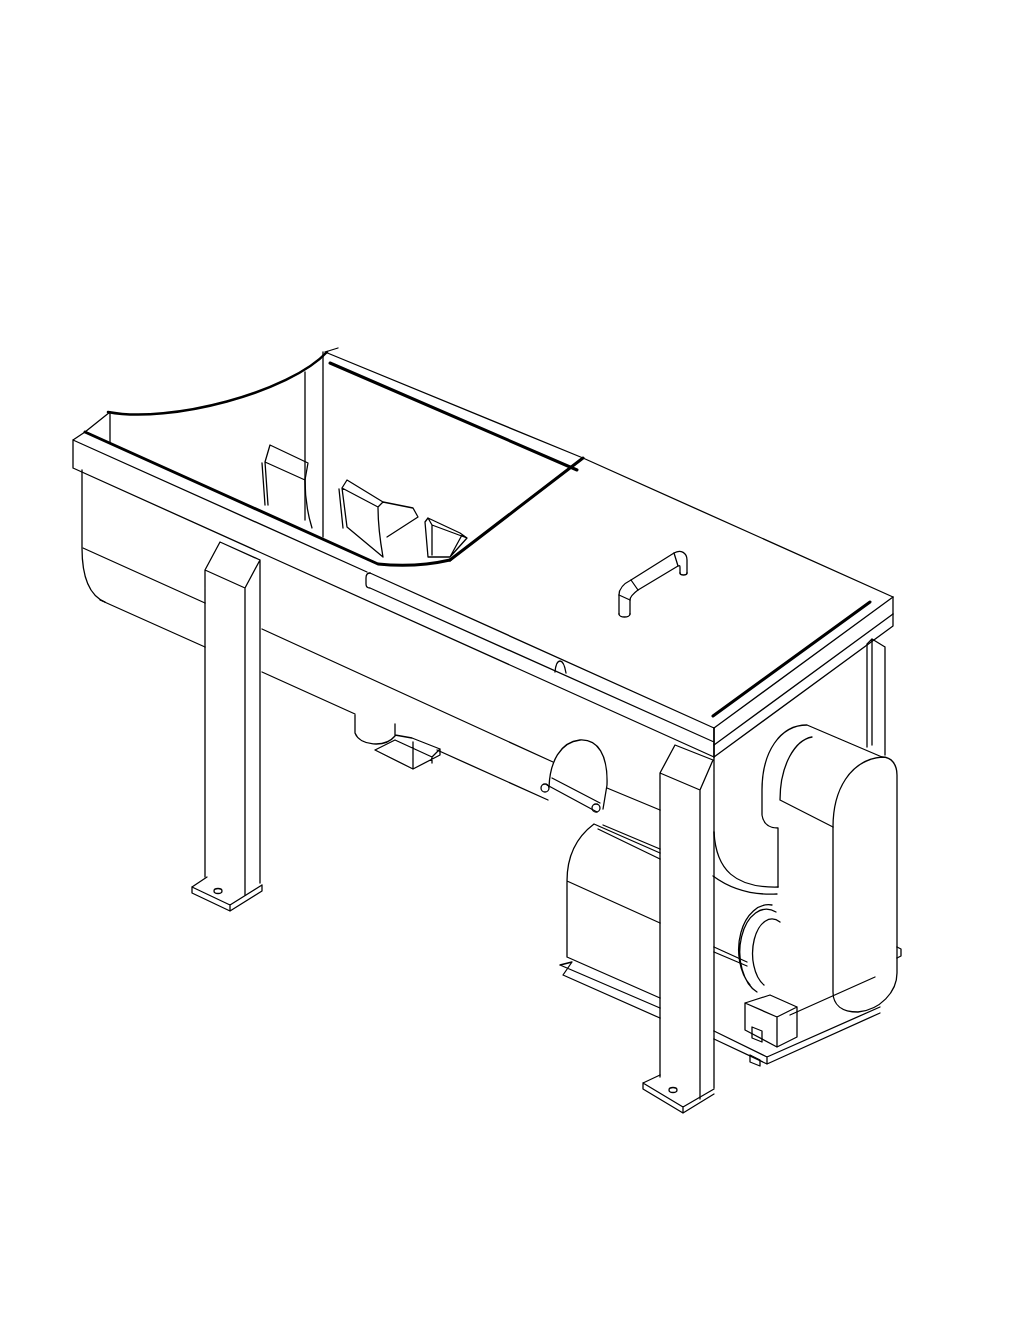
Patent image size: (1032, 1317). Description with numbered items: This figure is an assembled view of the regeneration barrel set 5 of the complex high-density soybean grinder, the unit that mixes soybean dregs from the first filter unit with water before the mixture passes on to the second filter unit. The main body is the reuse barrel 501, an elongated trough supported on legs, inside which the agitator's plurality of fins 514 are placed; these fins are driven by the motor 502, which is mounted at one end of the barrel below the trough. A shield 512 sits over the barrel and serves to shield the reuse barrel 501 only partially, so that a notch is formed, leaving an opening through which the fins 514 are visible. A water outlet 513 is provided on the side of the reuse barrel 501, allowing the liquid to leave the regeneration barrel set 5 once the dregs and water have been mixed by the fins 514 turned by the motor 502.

The regeneration barrel set 5 is at (593, 210).
The reuse barrel 501 is at (157, 607).
The motor 502 is at (792, 1015).
The shield 512 is at (605, 503).
The water outlet 513 is at (578, 780).
The fins 514 is at (358, 502).